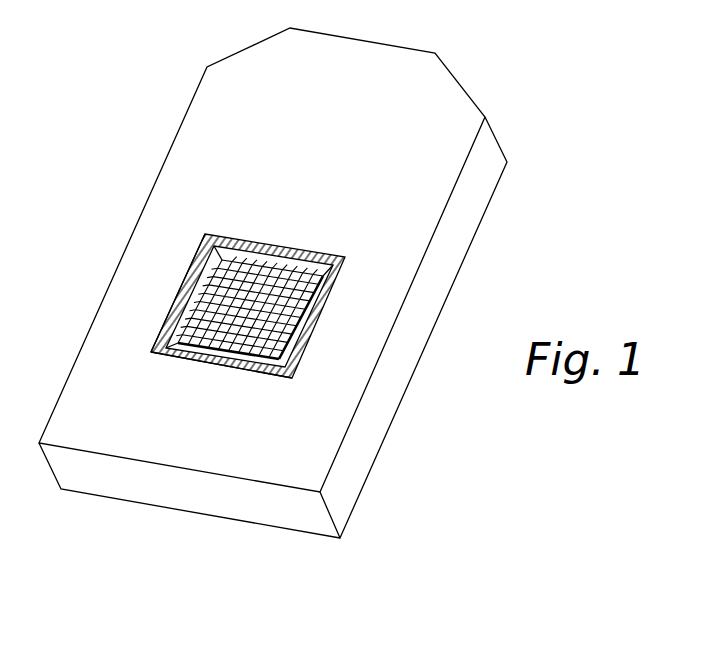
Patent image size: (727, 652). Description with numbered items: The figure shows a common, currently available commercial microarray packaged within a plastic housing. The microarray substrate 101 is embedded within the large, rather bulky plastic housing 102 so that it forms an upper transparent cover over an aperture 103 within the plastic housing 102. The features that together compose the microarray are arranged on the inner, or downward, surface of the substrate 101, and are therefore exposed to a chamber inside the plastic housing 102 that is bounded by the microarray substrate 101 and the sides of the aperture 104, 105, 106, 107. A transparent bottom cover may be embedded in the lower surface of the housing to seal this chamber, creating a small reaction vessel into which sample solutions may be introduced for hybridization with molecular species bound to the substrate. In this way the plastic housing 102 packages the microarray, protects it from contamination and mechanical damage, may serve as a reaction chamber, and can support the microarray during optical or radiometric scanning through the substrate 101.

The microarray substrate 101 is at (326, 279).
The plastic housing 102 is at (385, 406).
The aperture 103 is at (258, 262).
The side of the aperture 104 is at (295, 267).
The side of the aperture 105 is at (313, 327).
The side of the aperture 106 is at (223, 367).
The side of the aperture 107 is at (190, 265).